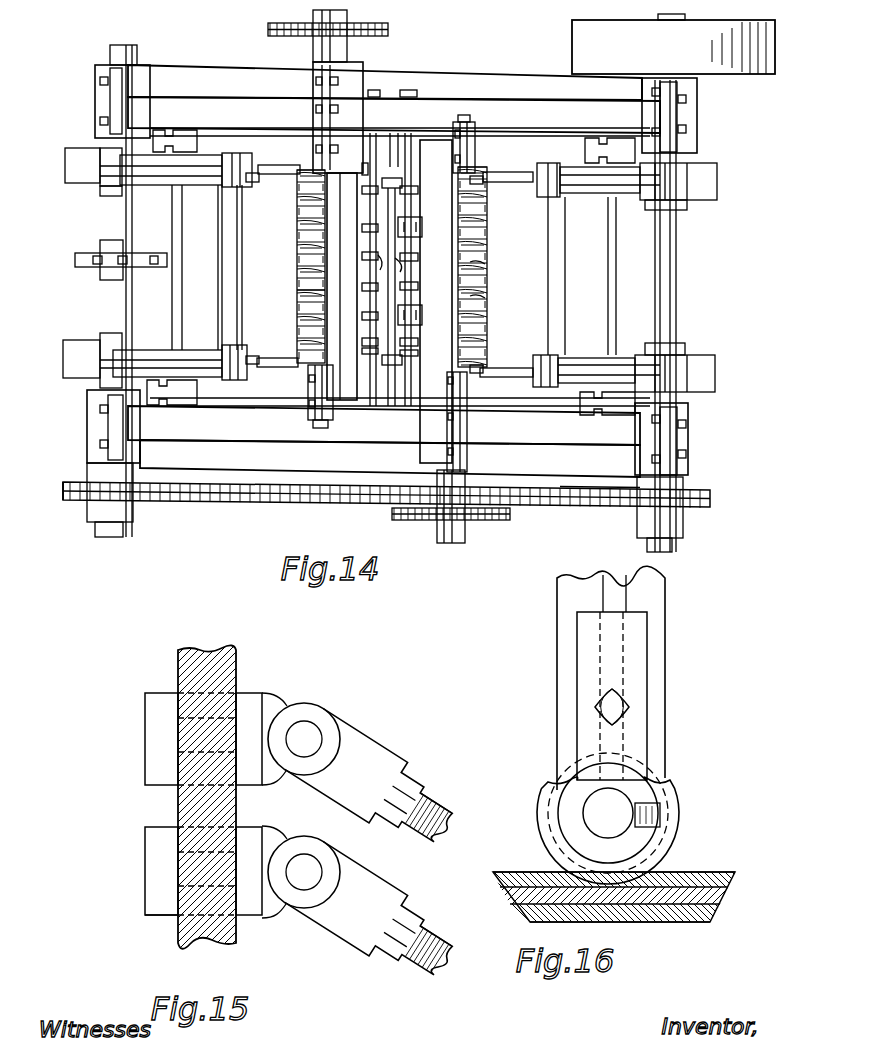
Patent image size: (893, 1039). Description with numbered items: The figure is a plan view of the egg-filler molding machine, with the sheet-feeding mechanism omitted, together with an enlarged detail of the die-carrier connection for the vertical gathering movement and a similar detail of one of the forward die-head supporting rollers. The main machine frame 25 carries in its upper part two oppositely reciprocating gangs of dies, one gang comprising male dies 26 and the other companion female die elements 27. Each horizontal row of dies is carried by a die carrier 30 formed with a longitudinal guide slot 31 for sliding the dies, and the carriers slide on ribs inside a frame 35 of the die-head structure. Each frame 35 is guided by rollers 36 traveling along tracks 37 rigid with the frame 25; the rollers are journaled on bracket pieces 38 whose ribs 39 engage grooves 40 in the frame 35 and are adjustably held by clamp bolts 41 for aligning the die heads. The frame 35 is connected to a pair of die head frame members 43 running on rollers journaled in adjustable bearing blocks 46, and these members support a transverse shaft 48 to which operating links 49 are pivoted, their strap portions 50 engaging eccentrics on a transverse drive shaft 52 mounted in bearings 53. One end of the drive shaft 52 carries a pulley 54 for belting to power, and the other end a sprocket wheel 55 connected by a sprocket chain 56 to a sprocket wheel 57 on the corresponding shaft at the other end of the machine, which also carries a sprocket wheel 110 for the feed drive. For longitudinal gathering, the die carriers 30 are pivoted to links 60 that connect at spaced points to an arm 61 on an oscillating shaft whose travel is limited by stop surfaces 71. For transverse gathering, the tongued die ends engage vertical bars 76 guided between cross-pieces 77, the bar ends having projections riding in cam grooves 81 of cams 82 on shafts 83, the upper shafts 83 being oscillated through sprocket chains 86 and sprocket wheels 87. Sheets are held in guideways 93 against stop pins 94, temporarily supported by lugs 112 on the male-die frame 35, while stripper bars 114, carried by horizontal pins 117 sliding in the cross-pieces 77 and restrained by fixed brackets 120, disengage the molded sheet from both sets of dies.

In FIG. 14, the main machine frame 25 is at (235, 460).
In FIG. 16, the main machine frame 25 is at (693, 923).
In FIG. 14, the male dies 26 is at (412, 240).
In FIG. 14, the female die elements 27 is at (360, 250).
In FIG. 15, the die carrier 30 is at (143, 827).
In FIG. 15, the longitudinal guide slot 31 is at (137, 919).
In FIG. 14, the frame 35 is at (432, 140).
In FIG. 15, the frame 35 is at (180, 940).
In FIG. 16, the frame 35 is at (667, 673).
In FIG. 16, the rollers 36 is at (680, 808).
In FIG. 16, the tracks 37 is at (707, 872).
In FIG. 16, the bracket pieces 38 is at (647, 752).
In FIG. 16, the ribs 39 is at (627, 660).
In FIG. 16, the grooves 40 is at (625, 604).
In FIG. 16, the clamp bolts 41 is at (623, 707).
In FIG. 14, the die head frame members 43 is at (227, 138).
In FIG. 14, the bearing blocks 46 is at (167, 138).
In FIG. 14, the transverse shaft 48 is at (222, 268).
In FIG. 14, the operating links 49 is at (195, 185).
In FIG. 14, the strap portions 50 is at (88, 183).
In FIG. 14, the transverse drive shaft 52 is at (678, 244).
In FIG. 14, the bearings 53 is at (95, 100).
In FIG. 14, the pulley 54 is at (765, 74).
In FIG. 14, the sprocket wheel 55 is at (712, 498).
In FIG. 14, the sprocket chain 56 is at (586, 502).
In FIG. 14, the sprocket wheel 57 is at (66, 490).
In FIG. 14, the links 60 is at (255, 183).
In FIG. 15, the links 60 is at (428, 933).
In FIG. 14, the arm 61 is at (278, 166).
In FIG. 14, the stop surfaces 71 is at (297, 292).
In FIG. 14, the vertical bars 76 is at (297, 243).
In FIG. 14, the cross-pieces 77 is at (488, 248).
In FIG. 14, the cam grooves 81 is at (487, 262).
In FIG. 14, the cams 82 is at (487, 296).
In FIG. 14, the shafts 83 is at (465, 118).
In FIG. 14, the sprocket chains 86 is at (358, 36).
In FIG. 14, the sprocket wheels 87 is at (268, 30).
In FIG. 14, the guideways 93 is at (378, 228).
In FIG. 14, the stop pins 94 is at (403, 180).
In FIG. 14, the sprocket wheel 110 is at (153, 253).
In FIG. 14, the lugs 112 is at (420, 224).
In FIG. 14, the stripper bars 114 is at (385, 268).
In FIG. 14, the horizontal pins 117 is at (362, 174).
In FIG. 14, the fixed brackets 120 is at (410, 90).